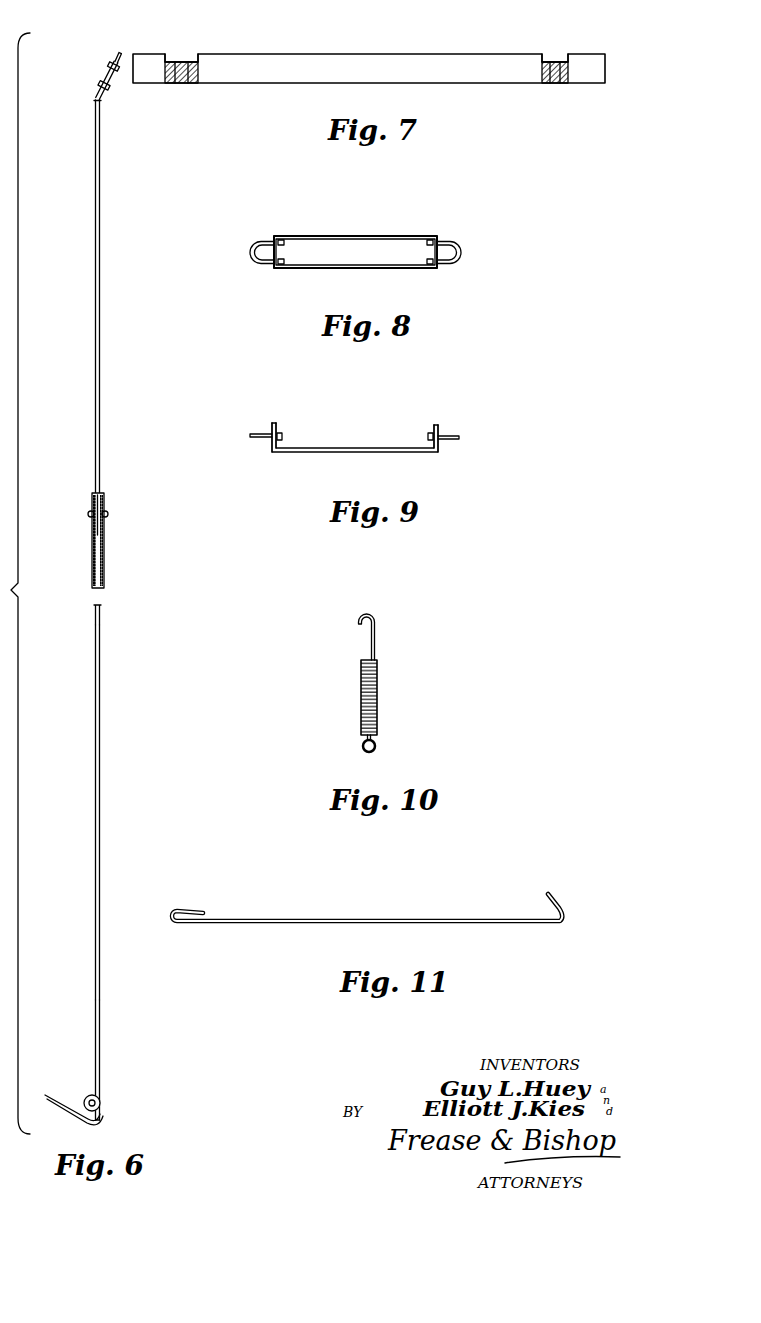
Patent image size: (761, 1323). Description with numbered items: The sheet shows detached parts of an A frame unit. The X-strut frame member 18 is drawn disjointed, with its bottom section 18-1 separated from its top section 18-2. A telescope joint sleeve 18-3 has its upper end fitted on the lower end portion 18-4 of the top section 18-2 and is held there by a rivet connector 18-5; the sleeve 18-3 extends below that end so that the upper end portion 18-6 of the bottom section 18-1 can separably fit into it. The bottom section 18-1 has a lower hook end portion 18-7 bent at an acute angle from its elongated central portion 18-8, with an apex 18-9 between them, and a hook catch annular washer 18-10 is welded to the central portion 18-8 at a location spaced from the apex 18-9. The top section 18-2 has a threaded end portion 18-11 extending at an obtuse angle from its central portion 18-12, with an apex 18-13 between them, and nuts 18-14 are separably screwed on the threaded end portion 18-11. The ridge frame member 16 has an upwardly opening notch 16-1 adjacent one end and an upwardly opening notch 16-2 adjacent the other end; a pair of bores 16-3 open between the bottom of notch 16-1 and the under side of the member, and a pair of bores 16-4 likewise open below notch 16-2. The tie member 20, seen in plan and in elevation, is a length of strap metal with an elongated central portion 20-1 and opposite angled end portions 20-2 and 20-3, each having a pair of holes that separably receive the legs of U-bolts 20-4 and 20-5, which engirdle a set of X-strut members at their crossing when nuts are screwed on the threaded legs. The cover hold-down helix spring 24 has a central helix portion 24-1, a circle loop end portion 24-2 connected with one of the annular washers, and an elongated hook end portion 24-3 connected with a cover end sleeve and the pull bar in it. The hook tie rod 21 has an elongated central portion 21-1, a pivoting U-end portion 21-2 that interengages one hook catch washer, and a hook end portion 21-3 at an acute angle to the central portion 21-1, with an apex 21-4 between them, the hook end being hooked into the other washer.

In FIG. 7, the ridge frame member 16 is at (361, 56).
In FIG. 7, the upwardly opening notch 16-1 is at (172, 58).
In FIG. 7, the upwardly opening notch 16-2 is at (549, 58).
In FIG. 7, the bores 16-3 is at (180, 86).
In FIG. 7, the bores 16-4 is at (545, 86).
In FIG. 6, the X-strut frame member 18 is at (103, 848).
In FIG. 6, the bottom section 18-1 is at (100, 752).
In FIG. 6, the top section 18-2 is at (100, 360).
In FIG. 6, the telescope joint sleeve 18-3 is at (104, 549).
In FIG. 6, the lower end portion 18-4 is at (108, 514).
In FIG. 6, the rivet connector 18-5 is at (89, 515).
In FIG. 6, the upper end portion 18-6 is at (101, 613).
In FIG. 6, the lower hook end portion 18-7 is at (57, 1106).
In FIG. 6, the elongated central portion 18-8 is at (100, 1031).
In FIG. 6, the apex 18-9 is at (95, 1119).
In FIG. 6, the hook catch annular washer 18-10 is at (85, 1097).
In FIG. 6, the threaded end portion 18-11 is at (107, 69).
In FIG. 6, the central portion 18-12 is at (100, 153).
In FIG. 6, the apex 18-13 is at (94, 99).
In FIG. 6, the nuts 18-14 is at (111, 56).
In FIG. 8, the tie member 20 is at (362, 237).
In FIG. 9, the tie member 20 is at (380, 455).
In FIG. 8, the elongated central portion 20-1 is at (360, 268).
In FIG. 9, the elongated central portion 20-1 is at (335, 451).
In FIG. 8, the angled end portion 20-2 is at (280, 240).
In FIG. 9, the angled end portion 20-2 is at (278, 430).
In FIG. 8, the angled end portion 20-3 is at (438, 268).
In FIG. 9, the angled end portion 20-3 is at (432, 426).
In FIG. 8, the U-bolt 20-4 is at (256, 256).
In FIG. 9, the U-bolt 20-4 is at (256, 440).
In FIG. 8, the U-bolt 20-5 is at (461, 250).
In FIG. 9, the U-bolt 20-5 is at (446, 437).
In FIG. 10, the cover hold-down helix spring 24 is at (361, 691).
In FIG. 10, the central helix portion 24-1 is at (378, 713).
In FIG. 10, the circle loop end portion 24-2 is at (381, 749).
In FIG. 10, the elongated hook end portion 24-3 is at (378, 633).
In FIG. 11, the hook tie rod 21 is at (345, 916).
In FIG. 11, the elongated central portion 21-1 is at (415, 925).
In FIG. 11, the pivoting U-end portion 21-2 is at (178, 908).
In FIG. 11, the hook end portion 21-3 is at (552, 897).
In FIG. 11, the apex 21-4 is at (562, 926).